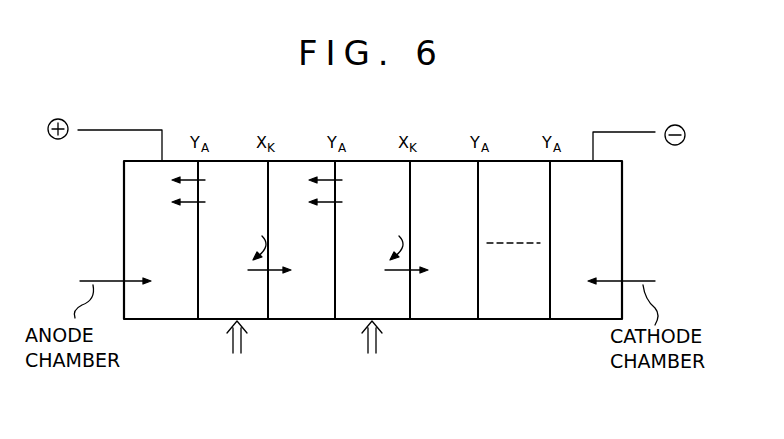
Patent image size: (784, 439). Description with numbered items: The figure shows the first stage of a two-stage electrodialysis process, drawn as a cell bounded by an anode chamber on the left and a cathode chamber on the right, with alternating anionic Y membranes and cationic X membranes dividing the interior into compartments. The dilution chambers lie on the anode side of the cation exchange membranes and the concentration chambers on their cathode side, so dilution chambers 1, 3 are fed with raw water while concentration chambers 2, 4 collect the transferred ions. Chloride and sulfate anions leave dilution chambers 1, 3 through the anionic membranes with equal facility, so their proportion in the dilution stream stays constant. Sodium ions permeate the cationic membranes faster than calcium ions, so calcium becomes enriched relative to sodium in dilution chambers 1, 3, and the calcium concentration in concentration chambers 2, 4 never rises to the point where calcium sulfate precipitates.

The dilution chamber 1 is at (231, 283).
The concentration chamber 2 is at (287, 240).
The dilution chamber 3 is at (368, 283).
The concentration chamber 4 is at (430, 240).